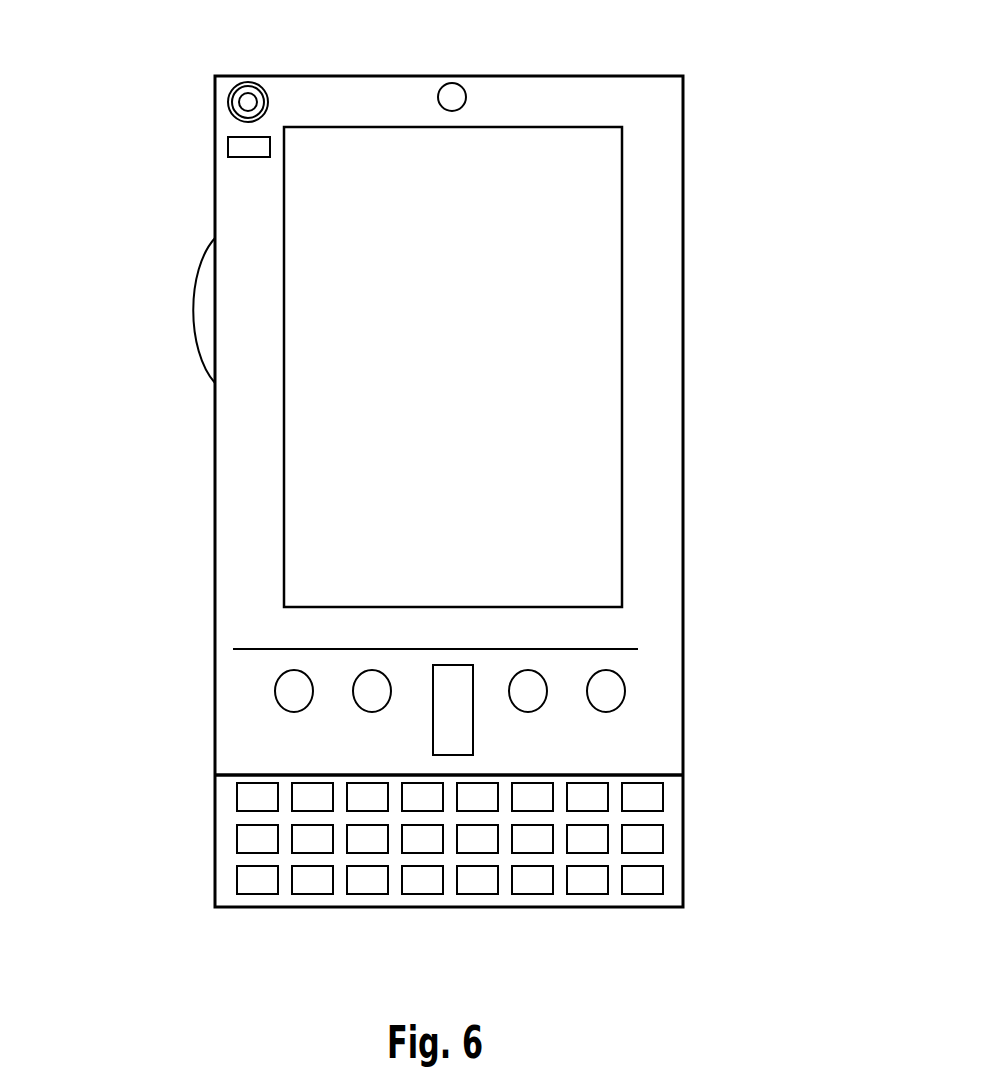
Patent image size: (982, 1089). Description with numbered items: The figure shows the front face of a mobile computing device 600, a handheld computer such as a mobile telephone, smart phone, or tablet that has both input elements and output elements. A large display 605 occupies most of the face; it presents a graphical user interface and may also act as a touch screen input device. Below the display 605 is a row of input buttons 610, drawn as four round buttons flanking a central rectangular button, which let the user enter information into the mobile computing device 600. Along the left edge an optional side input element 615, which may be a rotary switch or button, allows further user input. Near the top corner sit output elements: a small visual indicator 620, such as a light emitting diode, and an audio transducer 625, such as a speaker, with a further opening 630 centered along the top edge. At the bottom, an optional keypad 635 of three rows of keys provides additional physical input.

The mobile computing device 600 is at (668, 92).
The display 605 is at (388, 525).
The side input element 615 is at (207, 308).
The visual indicator 620 is at (228, 152).
The audio transducer 625 is at (222, 103).
The speaker 630 is at (462, 96).
The input buttons 610 is at (452, 715).
The keypad 635 is at (225, 882).